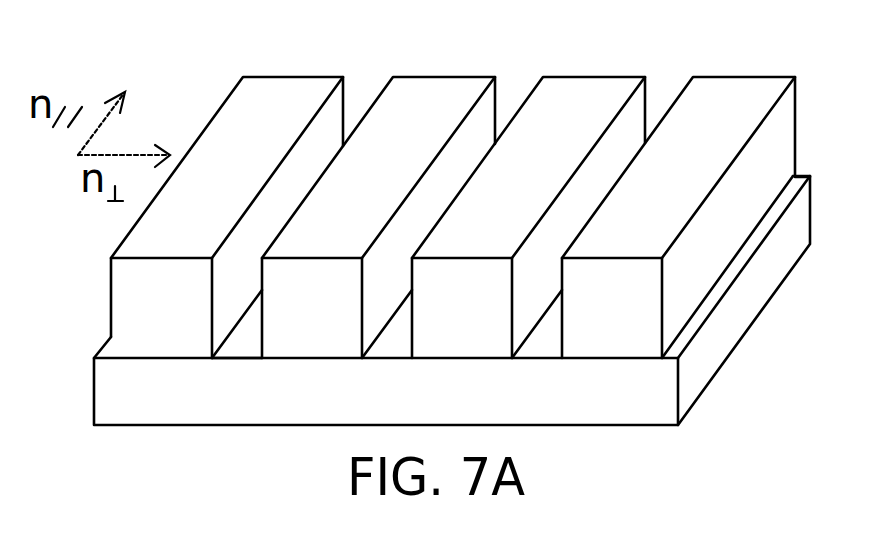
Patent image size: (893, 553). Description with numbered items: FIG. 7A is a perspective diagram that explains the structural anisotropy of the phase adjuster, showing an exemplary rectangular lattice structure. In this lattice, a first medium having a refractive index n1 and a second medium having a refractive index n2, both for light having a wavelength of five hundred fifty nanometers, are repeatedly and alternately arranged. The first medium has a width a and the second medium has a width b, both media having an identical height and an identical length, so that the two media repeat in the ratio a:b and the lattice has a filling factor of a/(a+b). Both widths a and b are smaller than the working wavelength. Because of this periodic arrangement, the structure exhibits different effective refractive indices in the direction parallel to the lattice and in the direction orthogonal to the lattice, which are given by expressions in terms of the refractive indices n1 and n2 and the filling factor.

The refractive index of the first medium n1 is at (262, 92).
The refractive index of the second medium n2 is at (362, 92).
The width of the first medium a is at (111, 337).
The width of the second medium b is at (262, 340).